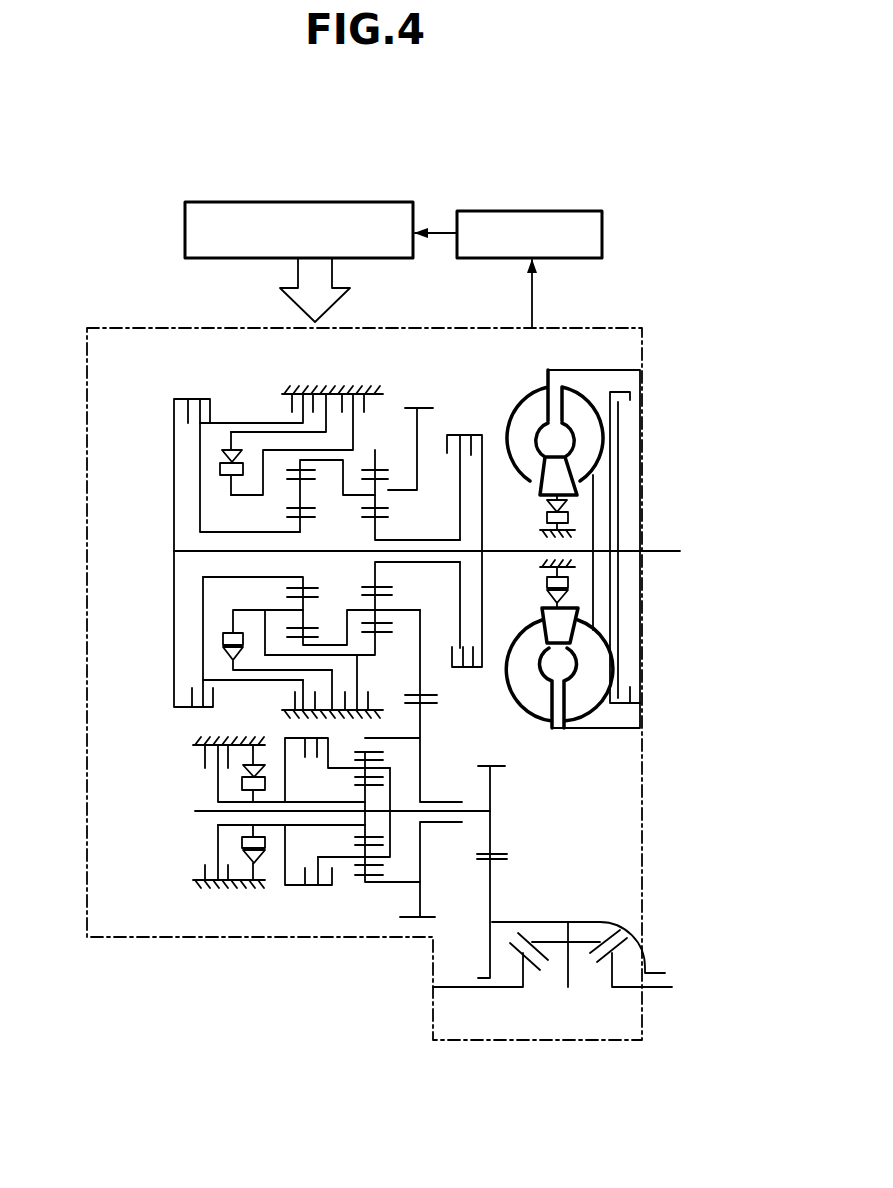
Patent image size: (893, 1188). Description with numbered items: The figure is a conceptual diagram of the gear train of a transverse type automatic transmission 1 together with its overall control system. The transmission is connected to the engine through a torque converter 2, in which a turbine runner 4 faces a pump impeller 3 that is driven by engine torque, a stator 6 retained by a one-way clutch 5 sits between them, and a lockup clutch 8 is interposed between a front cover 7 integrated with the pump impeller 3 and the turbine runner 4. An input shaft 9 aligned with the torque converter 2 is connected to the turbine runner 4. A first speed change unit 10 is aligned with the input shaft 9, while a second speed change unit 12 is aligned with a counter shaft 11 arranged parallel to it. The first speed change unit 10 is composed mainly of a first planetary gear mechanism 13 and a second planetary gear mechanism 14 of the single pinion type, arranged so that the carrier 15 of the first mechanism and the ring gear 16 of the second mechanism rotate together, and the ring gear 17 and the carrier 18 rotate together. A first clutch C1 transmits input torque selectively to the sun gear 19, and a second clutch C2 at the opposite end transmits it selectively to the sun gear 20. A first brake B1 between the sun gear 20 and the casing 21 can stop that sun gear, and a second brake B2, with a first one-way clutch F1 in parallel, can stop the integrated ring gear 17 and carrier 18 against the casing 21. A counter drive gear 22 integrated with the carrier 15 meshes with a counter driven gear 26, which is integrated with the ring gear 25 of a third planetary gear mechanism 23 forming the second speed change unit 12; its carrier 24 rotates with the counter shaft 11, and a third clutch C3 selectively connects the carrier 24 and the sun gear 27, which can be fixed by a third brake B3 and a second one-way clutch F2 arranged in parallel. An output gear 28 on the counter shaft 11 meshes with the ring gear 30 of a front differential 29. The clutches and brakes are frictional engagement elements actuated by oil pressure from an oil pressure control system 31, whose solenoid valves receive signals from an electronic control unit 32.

The automatic transmission 1 is at (83, 502).
The torque converter 2 is at (585, 577).
The pump impeller 3 is at (533, 395).
The turbine runner 4 is at (582, 698).
The one-way clutch 5 is at (548, 516).
The stator 6 is at (565, 625).
The front cover 7 is at (640, 458).
The lockup clutch 8 is at (632, 400).
The input shaft 9 is at (513, 551).
The first speed change unit 10 is at (289, 660).
The counter shaft 11 is at (216, 811).
The second speed change unit 12 is at (354, 866).
The first planetary gear mechanism 13 is at (374, 431).
The second planetary gear mechanism 14 is at (279, 467).
The carrier 15 is at (408, 503).
The ring gear 16 is at (295, 638).
The ring gear 17 is at (388, 472).
The carrier 18 is at (280, 610).
The sun gear 19 is at (386, 526).
The sun gear 20 is at (322, 566).
The casing 21 is at (333, 390).
The counter drive gear 22 is at (432, 696).
The third planetary gear mechanism 23 is at (354, 902).
The carrier 24 is at (392, 860).
The ring gear 25 is at (360, 880).
The counter driven gear 26 is at (422, 732).
The sun gear 27 is at (360, 790).
The output gear 28 is at (503, 853).
The front differential 29 is at (579, 910).
The ring gear 30 is at (503, 860).
The oil pressure control system 31 is at (310, 202).
The electronic control unit 32 is at (527, 211).
The first brake B1 is at (292, 404).
The second brake B2 is at (367, 405).
The third brake B3 is at (208, 876).
The first clutch C1 is at (471, 435).
The second clutch C2 is at (197, 398).
The third clutch C3 is at (337, 830).
The first one-way clutch F1 is at (231, 477).
The second one-way clutch F2 is at (263, 858).